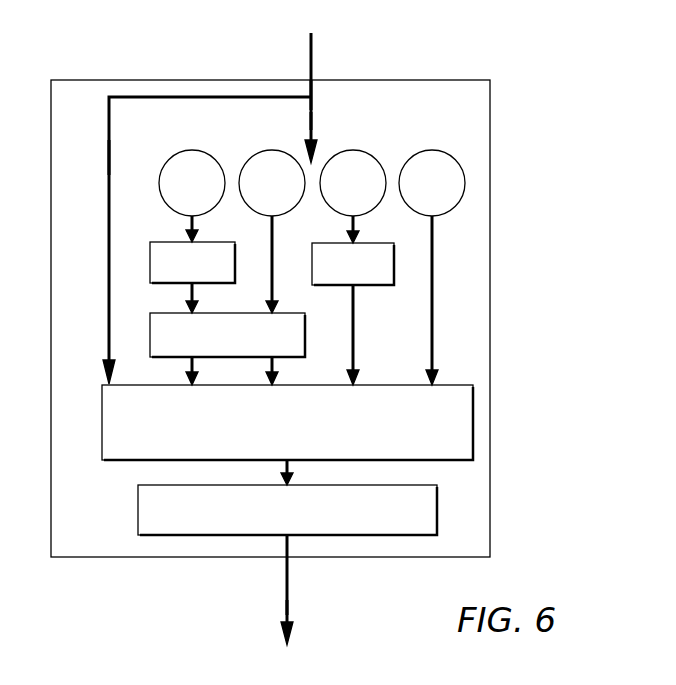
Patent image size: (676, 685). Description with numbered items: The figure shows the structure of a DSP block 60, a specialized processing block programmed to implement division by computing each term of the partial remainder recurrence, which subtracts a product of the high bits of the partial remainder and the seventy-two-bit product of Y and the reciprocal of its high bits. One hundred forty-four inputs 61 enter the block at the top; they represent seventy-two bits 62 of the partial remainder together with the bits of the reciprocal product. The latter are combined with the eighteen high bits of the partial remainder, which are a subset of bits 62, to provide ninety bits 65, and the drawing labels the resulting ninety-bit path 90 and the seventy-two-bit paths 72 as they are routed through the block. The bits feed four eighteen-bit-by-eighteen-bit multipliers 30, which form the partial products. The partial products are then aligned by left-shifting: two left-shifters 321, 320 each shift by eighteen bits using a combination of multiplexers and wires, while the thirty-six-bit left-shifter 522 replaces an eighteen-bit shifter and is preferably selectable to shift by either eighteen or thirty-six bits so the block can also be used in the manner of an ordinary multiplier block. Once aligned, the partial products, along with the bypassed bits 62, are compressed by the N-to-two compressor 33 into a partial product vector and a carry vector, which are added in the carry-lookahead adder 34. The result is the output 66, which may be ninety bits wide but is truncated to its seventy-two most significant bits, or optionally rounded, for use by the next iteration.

The DSP block 60 is at (540, 242).
The inputs 61 is at (313, 42).
The bits of R_i 62 is at (112, 118).
The bits 65 is at (311, 108).
The input node 90 is at (301, 125).
The signal line 72 is at (99, 163).
The multipliers 30 is at (252, 212).
The left-shifter 321 is at (205, 285).
The left-shifter 320 is at (368, 287).
The 36-bit left-shifter 522 is at (300, 359).
The N:2 compressor 33 is at (368, 385).
The carry-lookahead adder 34 is at (418, 487).
The output 66 is at (288, 610).